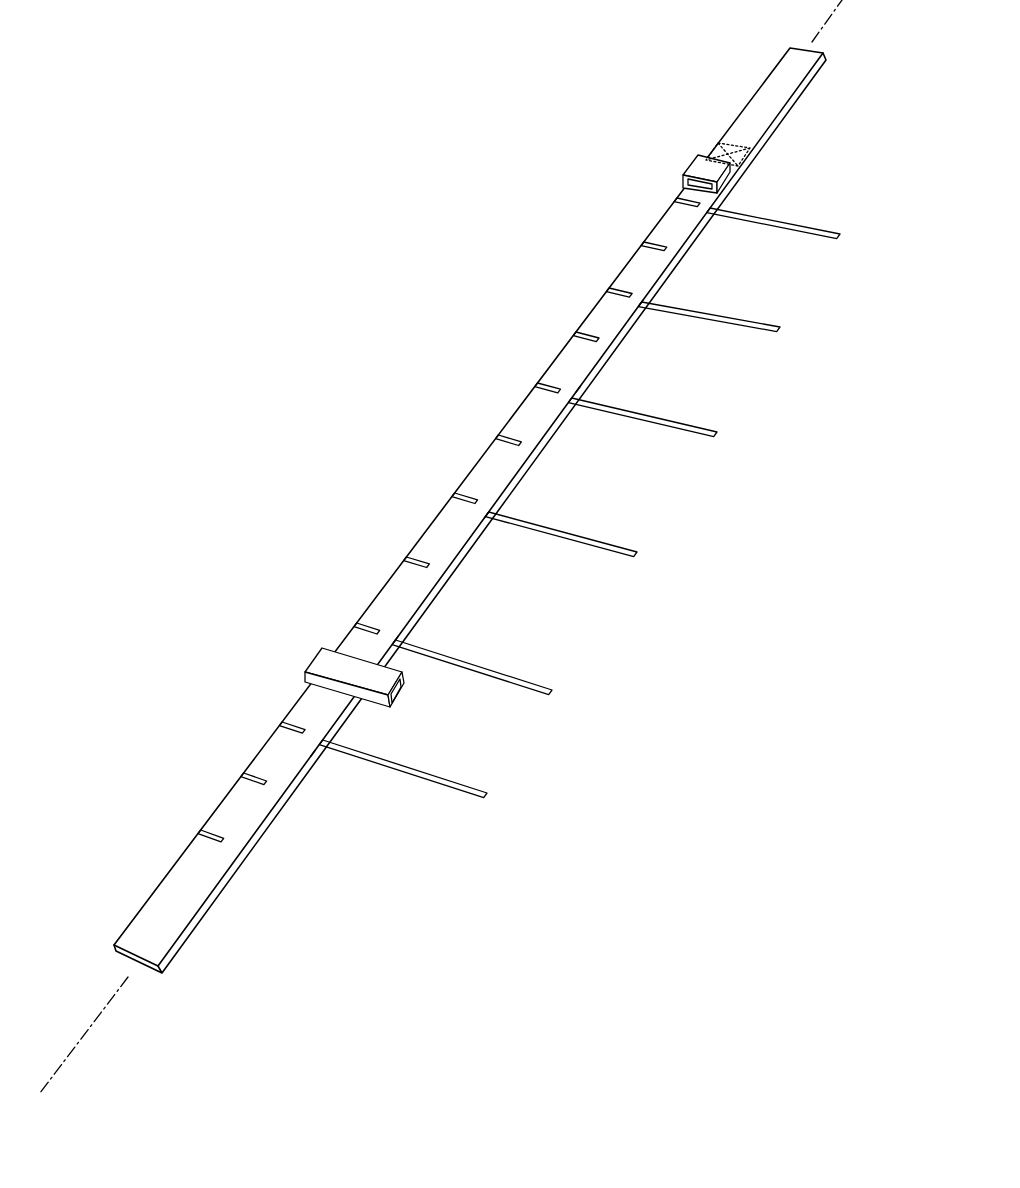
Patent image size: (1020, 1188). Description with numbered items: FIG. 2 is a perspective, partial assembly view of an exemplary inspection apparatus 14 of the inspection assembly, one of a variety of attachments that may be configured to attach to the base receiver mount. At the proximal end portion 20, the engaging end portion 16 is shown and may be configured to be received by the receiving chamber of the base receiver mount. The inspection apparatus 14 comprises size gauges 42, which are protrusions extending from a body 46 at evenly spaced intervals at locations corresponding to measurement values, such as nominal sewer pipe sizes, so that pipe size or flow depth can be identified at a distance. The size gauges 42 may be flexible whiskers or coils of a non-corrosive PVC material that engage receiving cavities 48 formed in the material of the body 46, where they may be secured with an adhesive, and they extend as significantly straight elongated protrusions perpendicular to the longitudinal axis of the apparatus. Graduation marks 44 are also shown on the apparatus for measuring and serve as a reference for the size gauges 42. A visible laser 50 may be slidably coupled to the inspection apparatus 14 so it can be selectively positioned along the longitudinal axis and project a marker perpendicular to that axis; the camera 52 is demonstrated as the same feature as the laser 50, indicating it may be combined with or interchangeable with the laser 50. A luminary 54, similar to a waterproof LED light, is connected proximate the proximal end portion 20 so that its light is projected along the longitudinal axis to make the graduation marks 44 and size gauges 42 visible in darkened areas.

The inspection apparatus 14 is at (482, 546).
The engaging end portion 16 is at (752, 152).
The proximal end portion 20 is at (519, 510).
The size gauges 42 is at (812, 238).
The graduation marks 44 is at (428, 557).
The body 46 is at (277, 758).
The receiving cavities 48 is at (600, 387).
The visible laser 50 is at (282, 634).
The camera 52 is at (295, 650).
The luminary 54 is at (697, 170).